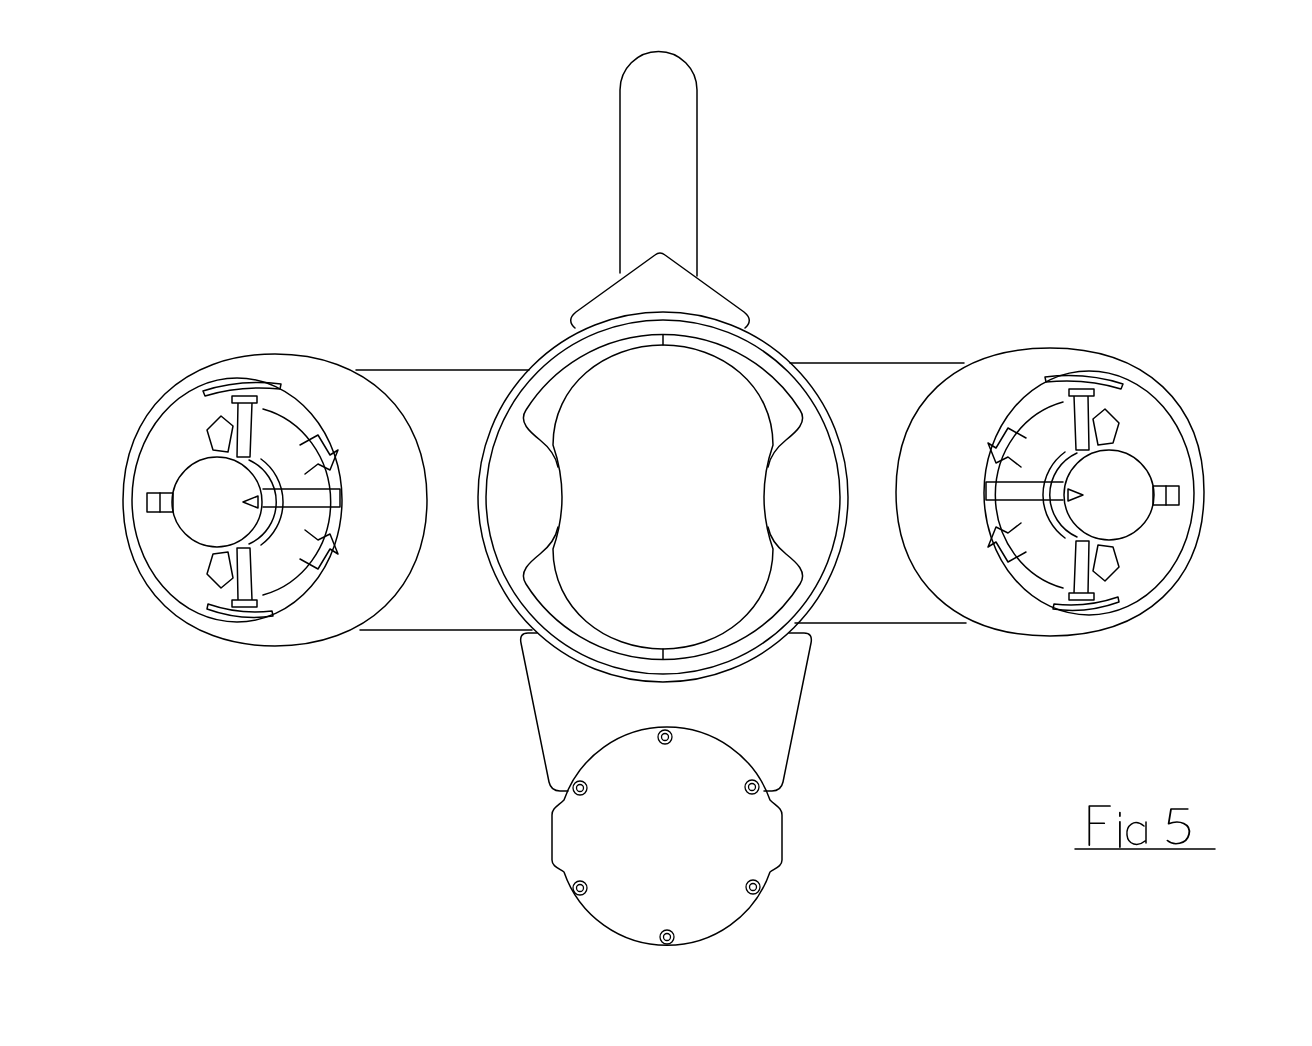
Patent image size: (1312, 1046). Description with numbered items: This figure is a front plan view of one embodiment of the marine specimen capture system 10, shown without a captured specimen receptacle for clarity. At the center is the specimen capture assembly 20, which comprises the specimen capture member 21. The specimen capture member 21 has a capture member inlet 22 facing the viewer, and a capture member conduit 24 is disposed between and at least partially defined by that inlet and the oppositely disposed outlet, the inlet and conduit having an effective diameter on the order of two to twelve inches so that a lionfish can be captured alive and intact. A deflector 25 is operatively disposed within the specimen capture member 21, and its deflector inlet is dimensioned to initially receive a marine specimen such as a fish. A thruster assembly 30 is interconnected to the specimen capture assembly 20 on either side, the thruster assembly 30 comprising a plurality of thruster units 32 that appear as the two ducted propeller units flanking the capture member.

The marine specimen capture system 10 is at (398, 86).
The specimen capture assembly 20 is at (915, 225).
The specimen capture member 21 is at (551, 348).
The capture member inlet 22 is at (517, 612).
The capture member conduit 24 is at (834, 500).
The deflector 25 is at (883, 717).
The thruster assembly 30 is at (1228, 288).
The thruster unit 32 is at (1240, 523).